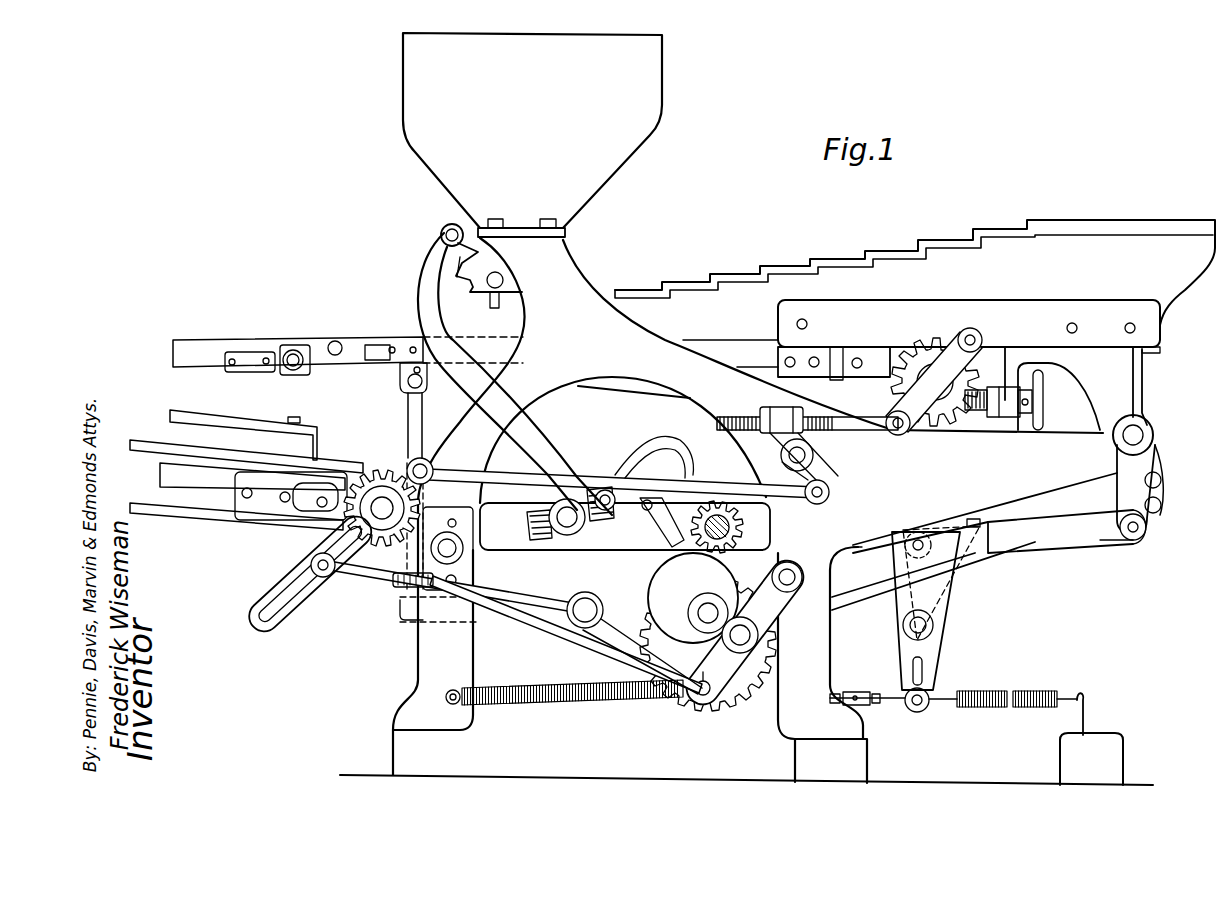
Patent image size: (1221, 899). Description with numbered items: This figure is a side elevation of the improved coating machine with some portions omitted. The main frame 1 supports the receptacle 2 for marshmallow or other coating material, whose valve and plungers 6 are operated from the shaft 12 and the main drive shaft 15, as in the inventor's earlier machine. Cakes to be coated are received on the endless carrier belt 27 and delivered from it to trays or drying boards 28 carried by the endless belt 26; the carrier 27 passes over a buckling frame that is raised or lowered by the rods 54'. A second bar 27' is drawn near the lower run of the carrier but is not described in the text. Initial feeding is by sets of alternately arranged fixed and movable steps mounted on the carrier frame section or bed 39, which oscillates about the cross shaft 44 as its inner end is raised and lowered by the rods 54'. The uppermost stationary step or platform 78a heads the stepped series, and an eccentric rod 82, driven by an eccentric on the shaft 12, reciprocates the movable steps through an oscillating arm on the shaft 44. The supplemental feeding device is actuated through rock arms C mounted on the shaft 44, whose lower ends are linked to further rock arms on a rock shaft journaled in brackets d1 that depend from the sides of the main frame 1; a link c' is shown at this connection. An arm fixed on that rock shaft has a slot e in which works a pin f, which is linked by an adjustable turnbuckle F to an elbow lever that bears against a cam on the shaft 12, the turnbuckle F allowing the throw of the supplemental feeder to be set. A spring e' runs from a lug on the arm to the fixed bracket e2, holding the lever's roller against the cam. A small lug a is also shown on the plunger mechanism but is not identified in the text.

The main frame 1 is at (600, 373).
The receptacle 2 is at (405, 90).
The plungers 6 is at (392, 369).
The stop lug a is at (498, 324).
The shaft 12 is at (708, 603).
The main drive shaft 15 is at (742, 525).
The endless belt 26 is at (246, 476).
The endless carrier belt 27 is at (576, 549).
The lower bar 27' is at (236, 531).
The trays or drying boards 28 is at (232, 420).
The carrier frame section or bed 39 is at (1150, 328).
The cross shaft 44 is at (1160, 435).
The rods 54' is at (338, 500).
The platform 78a is at (1090, 230).
The eccentric rod 82 is at (968, 553).
The rock arms C is at (1125, 487).
The lever arm c' is at (1087, 555).
The brackets d1 is at (890, 560).
The adjustable turnbuckle F is at (851, 695).
The slot e is at (962, 682).
The spring e' is at (1041, 682).
The bracket e2 is at (1063, 720).
The pin f is at (917, 710).